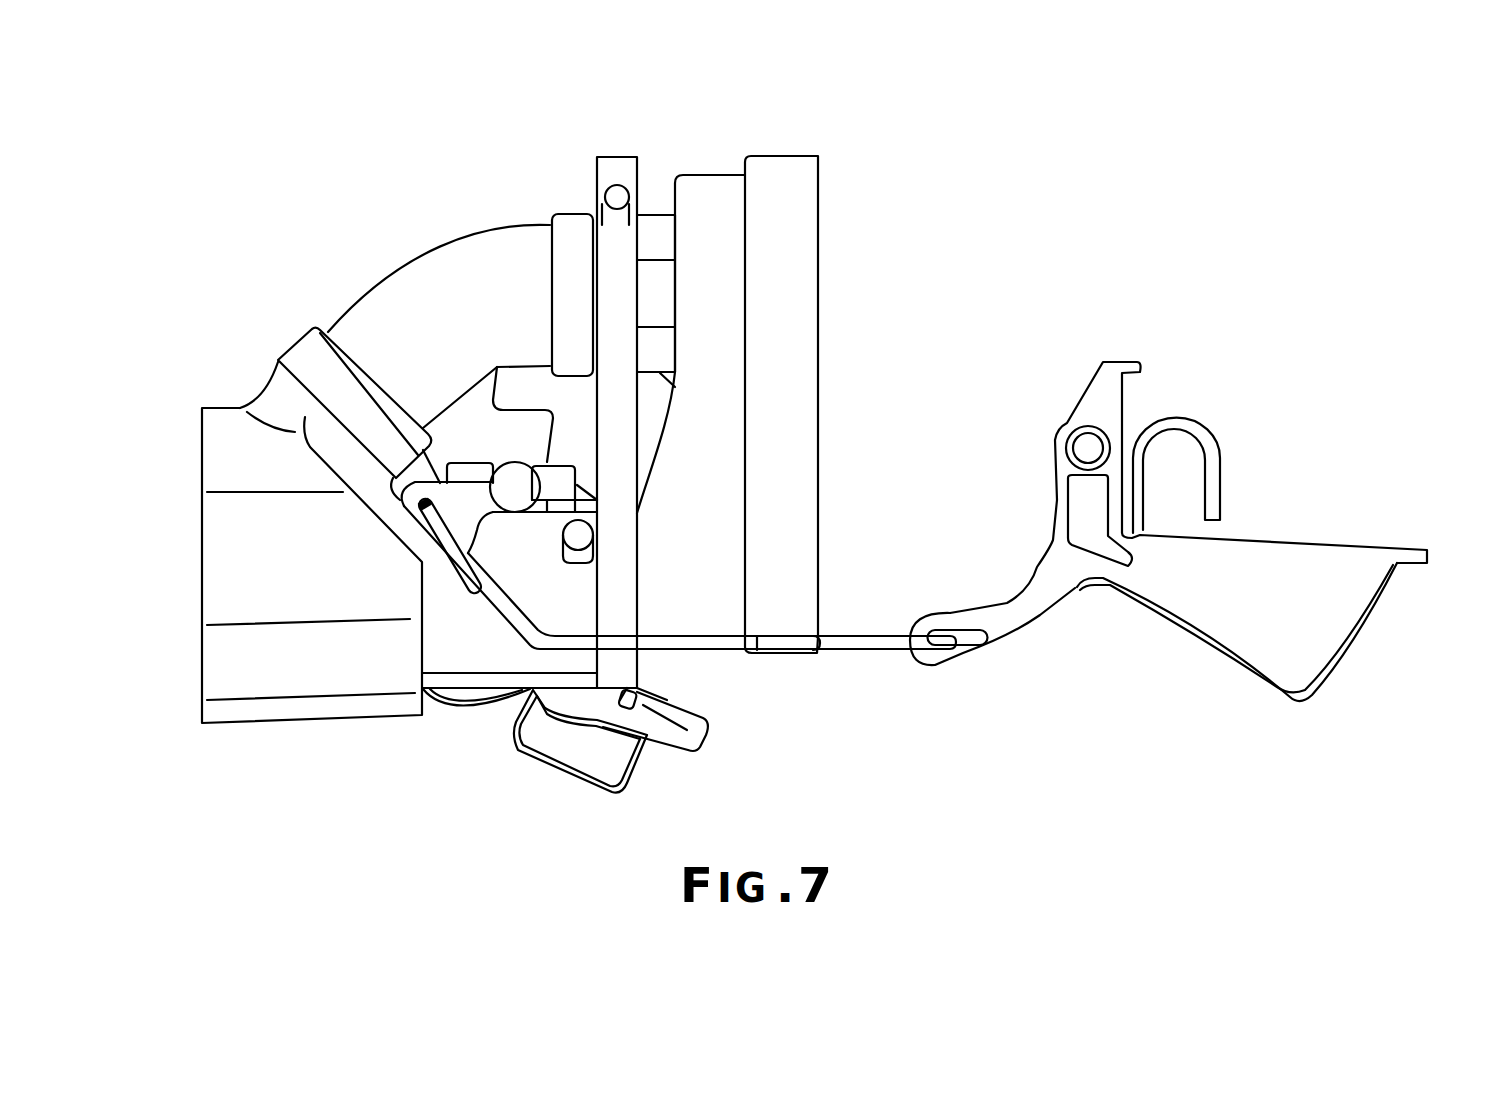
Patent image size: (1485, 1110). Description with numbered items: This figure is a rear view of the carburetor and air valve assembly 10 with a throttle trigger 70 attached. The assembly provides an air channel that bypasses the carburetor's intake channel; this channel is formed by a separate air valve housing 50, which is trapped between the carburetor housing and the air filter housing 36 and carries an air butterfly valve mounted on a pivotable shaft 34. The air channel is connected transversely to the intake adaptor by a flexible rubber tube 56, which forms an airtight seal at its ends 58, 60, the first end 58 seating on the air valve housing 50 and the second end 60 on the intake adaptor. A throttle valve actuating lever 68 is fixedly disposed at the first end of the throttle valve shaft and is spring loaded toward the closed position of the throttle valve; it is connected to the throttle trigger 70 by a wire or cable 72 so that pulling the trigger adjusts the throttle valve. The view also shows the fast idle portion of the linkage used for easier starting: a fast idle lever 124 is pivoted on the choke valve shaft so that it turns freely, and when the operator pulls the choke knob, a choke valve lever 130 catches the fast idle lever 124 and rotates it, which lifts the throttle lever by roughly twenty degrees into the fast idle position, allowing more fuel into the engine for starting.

The carburetor and air valve assembly 10 is at (365, 178).
The pivotable shaft 34 is at (595, 200).
The air filter housing 36 is at (780, 155).
The air valve housing 50 is at (619, 157).
The flexible rubber tube 56 is at (385, 277).
The end of rubber tube 58 is at (552, 220).
The end of rubber tube 60 is at (314, 329).
The throttle valve actuating lever 68 is at (313, 337).
The throttle trigger 70 is at (1227, 660).
The wire or cable 72 is at (838, 632).
The fast idle lever 124 is at (695, 746).
The choke valve lever 130 is at (563, 770).